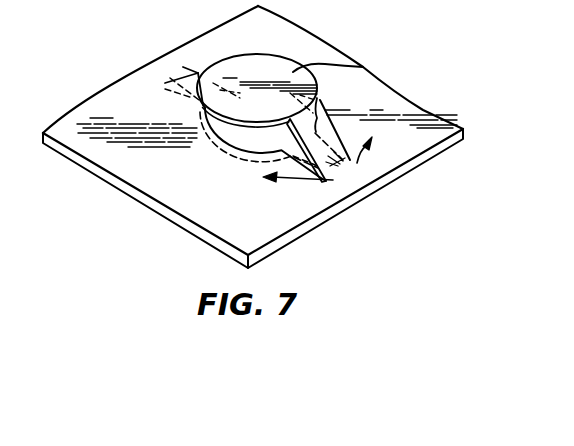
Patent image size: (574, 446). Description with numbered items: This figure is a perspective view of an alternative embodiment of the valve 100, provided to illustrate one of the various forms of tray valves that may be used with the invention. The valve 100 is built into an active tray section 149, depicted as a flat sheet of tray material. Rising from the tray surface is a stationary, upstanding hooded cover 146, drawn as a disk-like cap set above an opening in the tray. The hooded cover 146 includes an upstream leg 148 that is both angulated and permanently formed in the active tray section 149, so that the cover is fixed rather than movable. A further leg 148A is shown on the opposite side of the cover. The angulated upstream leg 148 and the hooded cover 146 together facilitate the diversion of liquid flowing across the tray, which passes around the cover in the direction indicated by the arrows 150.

The valve 100 is at (297, 20).
The hooded cover 146 is at (363, 67).
The upstream leg 148 is at (325, 135).
The tab 148A is at (182, 74).
The active tray section 149 is at (420, 137).
The arrows 150 is at (304, 180).